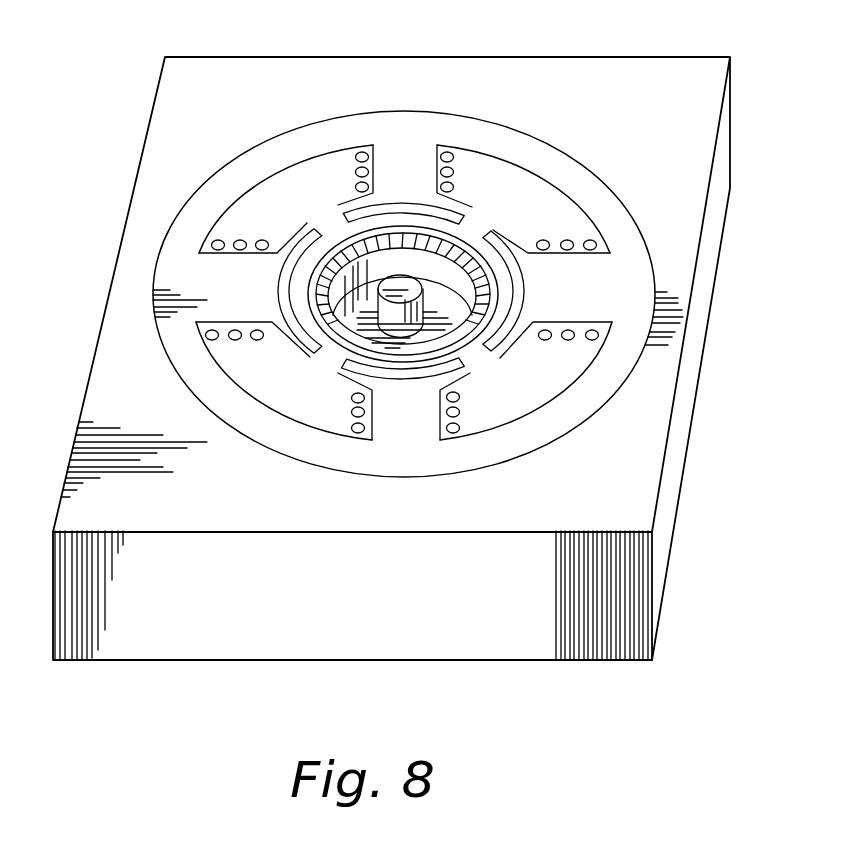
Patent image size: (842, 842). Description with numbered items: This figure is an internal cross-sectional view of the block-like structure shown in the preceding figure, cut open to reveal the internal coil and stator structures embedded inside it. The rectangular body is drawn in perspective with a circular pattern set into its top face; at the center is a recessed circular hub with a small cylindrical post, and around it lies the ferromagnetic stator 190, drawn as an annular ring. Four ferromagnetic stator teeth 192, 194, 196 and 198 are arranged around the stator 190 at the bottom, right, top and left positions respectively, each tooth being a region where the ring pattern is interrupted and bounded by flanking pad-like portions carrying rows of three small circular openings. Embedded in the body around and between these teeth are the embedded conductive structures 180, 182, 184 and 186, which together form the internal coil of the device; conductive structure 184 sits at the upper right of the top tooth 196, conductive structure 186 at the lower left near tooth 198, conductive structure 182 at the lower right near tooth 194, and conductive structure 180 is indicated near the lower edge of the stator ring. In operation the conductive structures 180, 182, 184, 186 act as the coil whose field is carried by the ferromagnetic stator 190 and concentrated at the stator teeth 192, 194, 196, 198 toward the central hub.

The embedded conductive structure 180 is at (456, 429).
The embedded conductive structure 182 is at (592, 338).
The embedded conductive structure 184 is at (453, 153).
The embedded conductive structure 186 is at (212, 337).
The ferromagnetic stator 190 is at (540, 163).
The ferromagnetic stator tooth 192 is at (407, 410).
The ferromagnetic stator tooth 194 is at (563, 285).
The ferromagnetic stator tooth 196 is at (402, 170).
The ferromagnetic stator tooth 198 is at (230, 292).